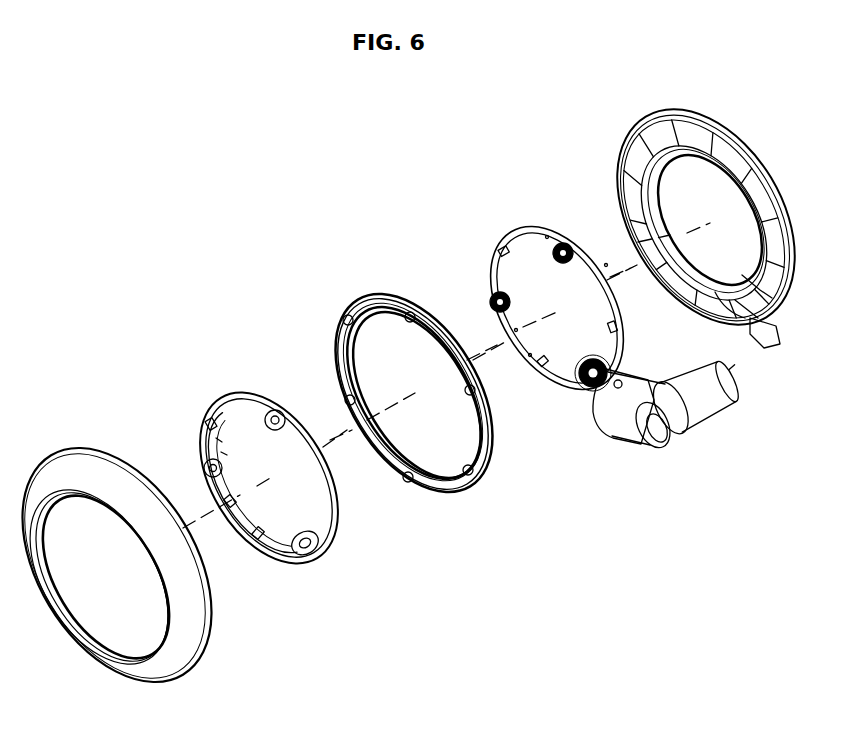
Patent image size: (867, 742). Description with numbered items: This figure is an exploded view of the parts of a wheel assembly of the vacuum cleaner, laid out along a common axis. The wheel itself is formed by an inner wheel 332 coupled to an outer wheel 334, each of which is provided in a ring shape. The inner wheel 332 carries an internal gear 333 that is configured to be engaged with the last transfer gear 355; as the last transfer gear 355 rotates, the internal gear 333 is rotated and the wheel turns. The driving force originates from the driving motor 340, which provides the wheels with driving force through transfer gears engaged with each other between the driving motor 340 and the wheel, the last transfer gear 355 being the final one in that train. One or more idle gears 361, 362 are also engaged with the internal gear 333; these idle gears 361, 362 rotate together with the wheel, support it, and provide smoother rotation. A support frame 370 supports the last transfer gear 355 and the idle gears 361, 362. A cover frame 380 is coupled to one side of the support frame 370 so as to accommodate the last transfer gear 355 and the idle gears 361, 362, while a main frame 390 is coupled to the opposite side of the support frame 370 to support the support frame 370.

The inner wheel 332 is at (371, 308).
The internal gear 333 is at (335, 318).
The outer wheel 334 is at (55, 470).
The driving motor 340 is at (718, 415).
The last transfer gear 355 is at (583, 392).
The idle gear 361 is at (493, 296).
The idle gear 362 is at (566, 238).
The support frame 370 is at (520, 233).
The cover frame 380 is at (211, 396).
The main frame 390 is at (692, 122).